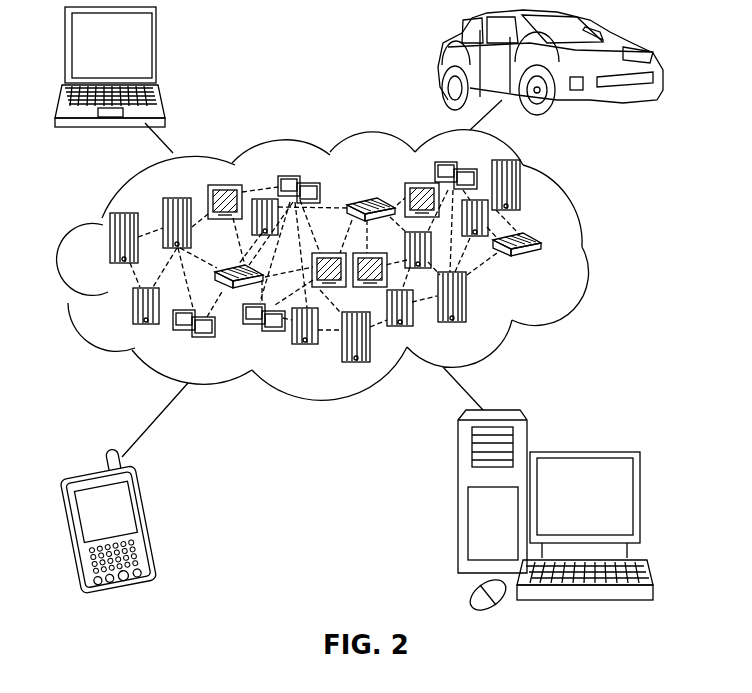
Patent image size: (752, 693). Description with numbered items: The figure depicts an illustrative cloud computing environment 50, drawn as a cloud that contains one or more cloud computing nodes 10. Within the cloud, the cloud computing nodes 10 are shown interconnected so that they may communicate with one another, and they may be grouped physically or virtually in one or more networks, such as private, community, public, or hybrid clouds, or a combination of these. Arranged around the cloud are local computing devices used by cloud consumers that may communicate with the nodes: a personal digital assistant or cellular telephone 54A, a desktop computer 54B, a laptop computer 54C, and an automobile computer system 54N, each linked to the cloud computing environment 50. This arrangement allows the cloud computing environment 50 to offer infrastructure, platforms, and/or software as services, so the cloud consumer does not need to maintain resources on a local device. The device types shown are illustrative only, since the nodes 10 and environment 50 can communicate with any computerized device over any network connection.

The cloud computing nodes 10 is at (545, 268).
The cloud computing environment 50 is at (585, 245).
The personal digital assistant (PDA) or cellular telephone 54A is at (150, 515).
The desktop computer 54B is at (583, 450).
The laptop computer 54C is at (155, 50).
The automobile computer system 54N is at (440, 63).